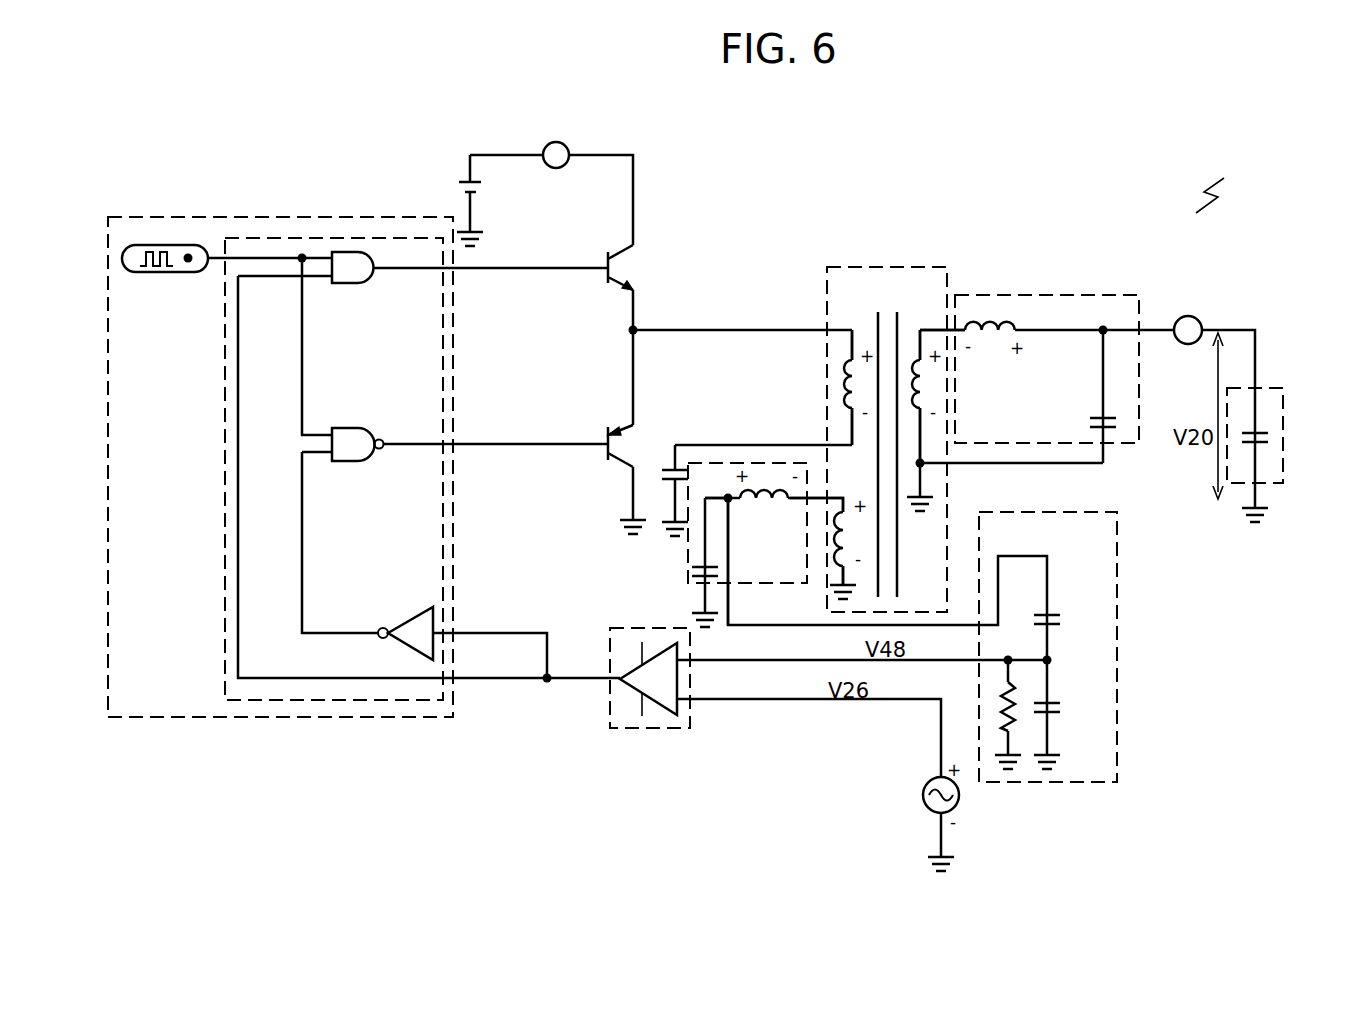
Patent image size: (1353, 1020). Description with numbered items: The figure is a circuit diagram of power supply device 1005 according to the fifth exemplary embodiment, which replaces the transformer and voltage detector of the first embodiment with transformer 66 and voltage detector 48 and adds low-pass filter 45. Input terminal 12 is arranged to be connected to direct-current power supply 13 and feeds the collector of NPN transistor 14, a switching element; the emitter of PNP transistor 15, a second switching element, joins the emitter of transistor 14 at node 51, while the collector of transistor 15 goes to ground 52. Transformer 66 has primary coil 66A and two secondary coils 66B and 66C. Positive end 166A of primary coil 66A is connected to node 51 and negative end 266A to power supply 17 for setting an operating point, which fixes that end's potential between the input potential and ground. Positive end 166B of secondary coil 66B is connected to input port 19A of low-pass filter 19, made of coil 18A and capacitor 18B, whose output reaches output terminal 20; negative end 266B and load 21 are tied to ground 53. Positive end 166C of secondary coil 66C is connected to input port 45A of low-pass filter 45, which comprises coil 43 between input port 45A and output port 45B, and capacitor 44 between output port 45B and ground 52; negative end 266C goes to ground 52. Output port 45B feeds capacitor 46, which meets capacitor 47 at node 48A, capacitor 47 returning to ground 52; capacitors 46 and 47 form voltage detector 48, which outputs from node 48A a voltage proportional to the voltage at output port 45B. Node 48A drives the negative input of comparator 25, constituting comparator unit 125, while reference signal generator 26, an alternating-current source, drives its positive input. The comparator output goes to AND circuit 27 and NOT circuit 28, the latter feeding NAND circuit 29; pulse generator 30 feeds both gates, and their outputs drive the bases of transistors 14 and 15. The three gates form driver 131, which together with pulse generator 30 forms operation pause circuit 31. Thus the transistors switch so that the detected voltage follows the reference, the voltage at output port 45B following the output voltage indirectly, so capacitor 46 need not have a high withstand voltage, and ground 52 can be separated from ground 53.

The power supply device 1005 is at (1227, 183).
The input terminal 12 is at (556, 170).
The direct-current power supply 13 is at (461, 178).
The NPN transistor 14 is at (637, 270).
The PNP transistor 15 is at (611, 422).
The power supply for setting an operating point 17 is at (667, 462).
The coil 18A is at (985, 320).
The capacitor 18B is at (1087, 418).
The low-pass filter 19 is at (1065, 295).
The input port 19A is at (950, 330).
The output terminal 20 is at (1188, 310).
The load 21 is at (1275, 388).
The comparator 25 is at (670, 715).
The comparator unit 125 is at (607, 722).
The reference signal generator 26 is at (962, 797).
The AND circuit 27 is at (348, 287).
The NOT circuit 28 is at (412, 618).
The NAND circuit 29 is at (353, 425).
The pulse generator 30 is at (162, 273).
The operation pause circuit 31 is at (298, 213).
The driver 131 is at (222, 600).
The coil 43 is at (765, 505).
The capacitor 44 is at (688, 569).
The low-pass filter 45 is at (685, 543).
The input port 45A is at (780, 462).
The output port 45B is at (728, 586).
The capacitor 46 is at (1065, 612).
The capacitor 47 is at (1063, 700).
The voltage detector 48 is at (1118, 630).
The node 48A is at (1048, 659).
The node 51 is at (628, 333).
The ground 52 is at (666, 522).
The ground 53 is at (927, 502).
The transformer 66 is at (882, 265).
The primary coil 66A is at (847, 378).
The secondary coil 66B is at (930, 378).
The secondary coil 66C is at (837, 533).
The positive end 166A is at (852, 347).
The positive end 166B is at (922, 330).
The positive end 166C is at (840, 495).
The negative end 266A is at (853, 427).
The negative end 266B is at (923, 430).
The negative end 266C is at (840, 572).